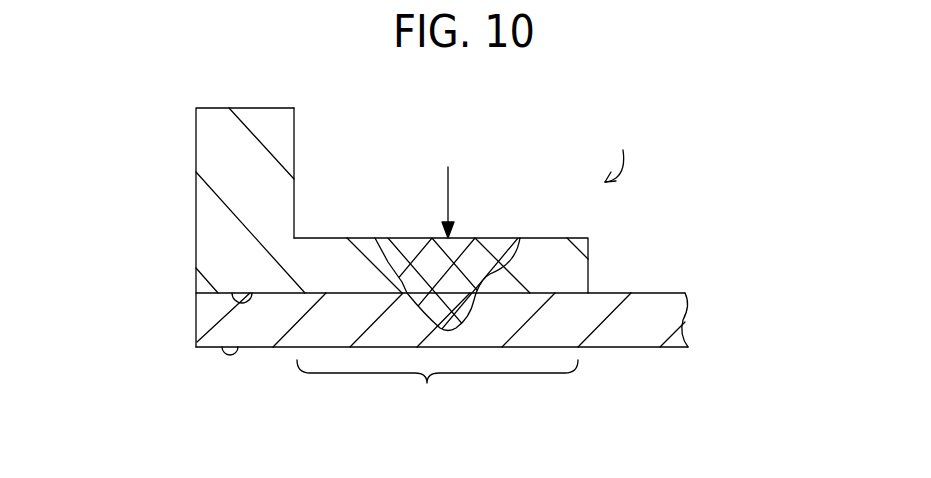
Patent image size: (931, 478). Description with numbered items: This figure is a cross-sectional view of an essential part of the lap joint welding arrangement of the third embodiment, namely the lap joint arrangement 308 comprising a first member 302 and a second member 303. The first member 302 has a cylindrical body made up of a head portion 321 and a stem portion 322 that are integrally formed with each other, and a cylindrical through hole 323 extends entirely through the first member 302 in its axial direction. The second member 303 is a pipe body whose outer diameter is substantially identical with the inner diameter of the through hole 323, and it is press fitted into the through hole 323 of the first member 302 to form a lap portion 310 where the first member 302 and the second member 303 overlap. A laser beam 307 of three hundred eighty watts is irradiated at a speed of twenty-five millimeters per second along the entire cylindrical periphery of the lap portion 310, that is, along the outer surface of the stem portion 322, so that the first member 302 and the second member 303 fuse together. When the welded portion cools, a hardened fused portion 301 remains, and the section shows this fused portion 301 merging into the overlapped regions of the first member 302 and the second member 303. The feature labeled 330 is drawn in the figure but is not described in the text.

The fused portion 301 is at (497, 252).
The first member 302 is at (300, 195).
The second member 303 is at (650, 322).
The laser beam 307 is at (447, 198).
The lap joint arrangement 308 is at (641, 144).
The lap portion 310 is at (437, 396).
The head portion 321 is at (222, 138).
The stem portion 322 is at (567, 265).
The cylindrical through hole 323 is at (240, 304).
The solder ball 330 is at (225, 342).